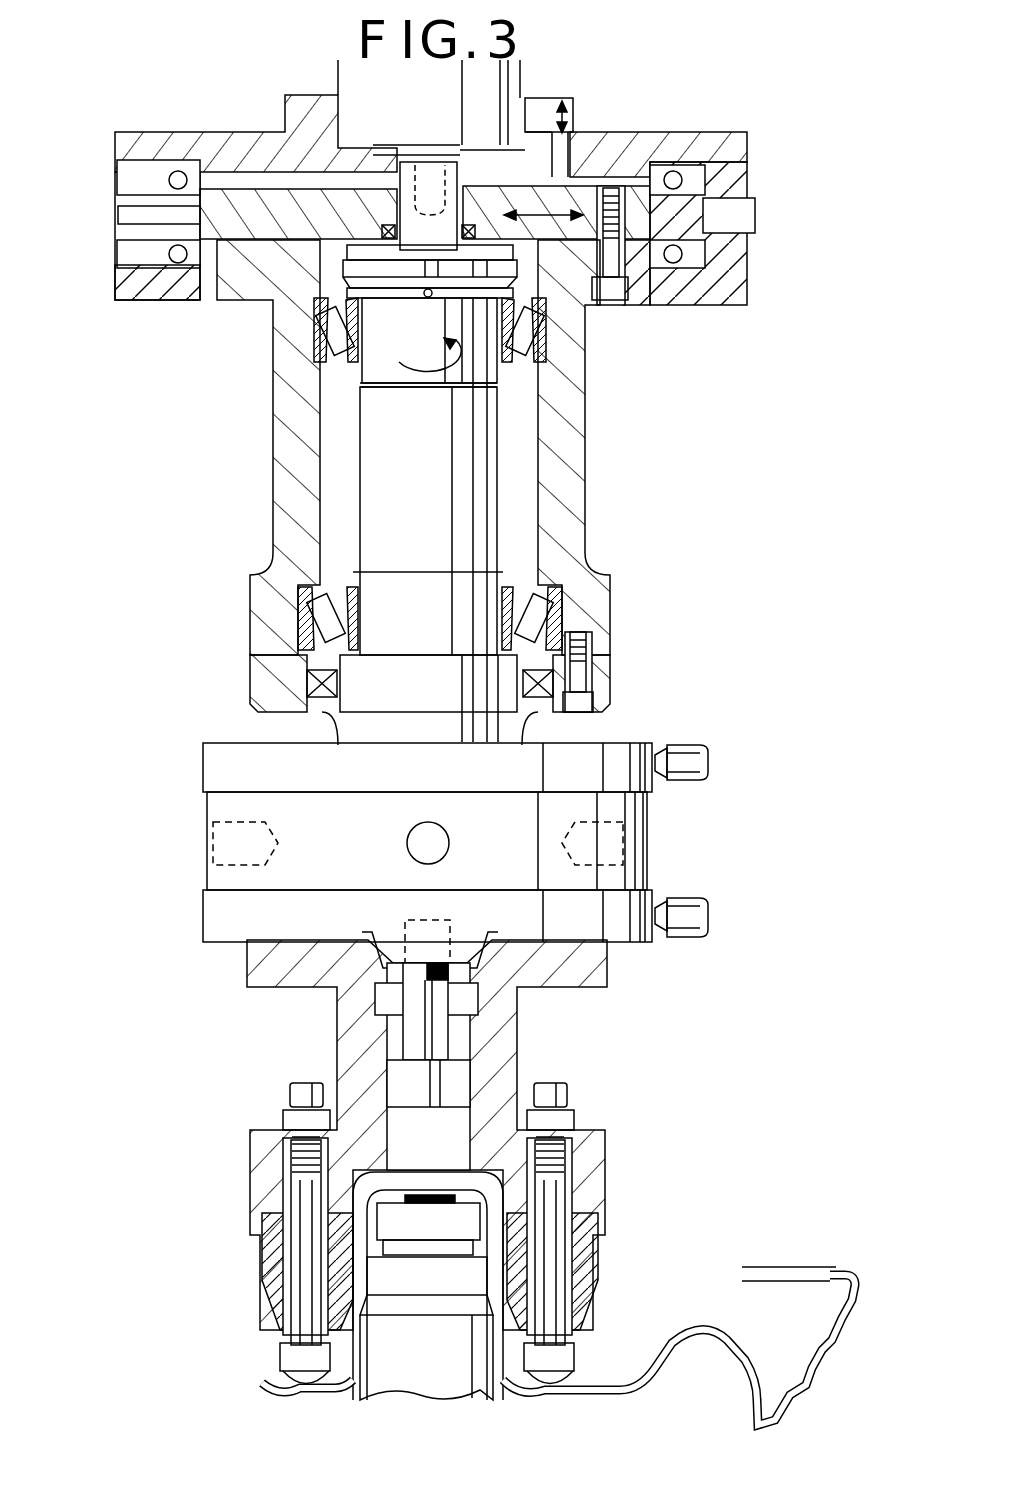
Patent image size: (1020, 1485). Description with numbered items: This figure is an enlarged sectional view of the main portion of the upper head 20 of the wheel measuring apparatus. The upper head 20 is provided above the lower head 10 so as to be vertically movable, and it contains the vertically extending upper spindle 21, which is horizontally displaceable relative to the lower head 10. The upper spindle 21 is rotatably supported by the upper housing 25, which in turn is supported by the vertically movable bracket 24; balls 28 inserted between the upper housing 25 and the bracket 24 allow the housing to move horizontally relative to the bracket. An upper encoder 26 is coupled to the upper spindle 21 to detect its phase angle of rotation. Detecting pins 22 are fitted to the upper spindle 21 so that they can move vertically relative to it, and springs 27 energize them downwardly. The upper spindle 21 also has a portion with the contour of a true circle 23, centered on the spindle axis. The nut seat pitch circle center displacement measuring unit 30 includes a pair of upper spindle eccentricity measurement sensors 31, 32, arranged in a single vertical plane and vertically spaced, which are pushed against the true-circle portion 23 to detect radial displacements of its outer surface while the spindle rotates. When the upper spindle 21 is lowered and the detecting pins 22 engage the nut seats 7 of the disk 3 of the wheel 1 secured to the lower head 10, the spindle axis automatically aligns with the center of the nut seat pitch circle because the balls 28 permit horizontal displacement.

The wheel 1 is at (830, 1313).
The disk 3 is at (703, 1325).
The nut seats 7 is at (564, 1357).
The lower head 10 is at (418, 1343).
The upper head 20 is at (610, 591).
The upper spindle 21 is at (461, 464).
The detecting pins 22 is at (570, 1340).
The portion with the contour of a true circle 23 is at (657, 747).
The bracket 24 is at (233, 150).
The upper housing 25 is at (663, 216).
The upper encoder 26 is at (448, 107).
The springs 27 is at (568, 1185).
The balls 28 is at (707, 244).
The nut seat pitch circle center displacement measuring unit 30 is at (514, 853).
The upper spindle eccentricity measurement sensor 31 is at (693, 760).
The upper spindle eccentricity measurement sensor 32 is at (717, 912).